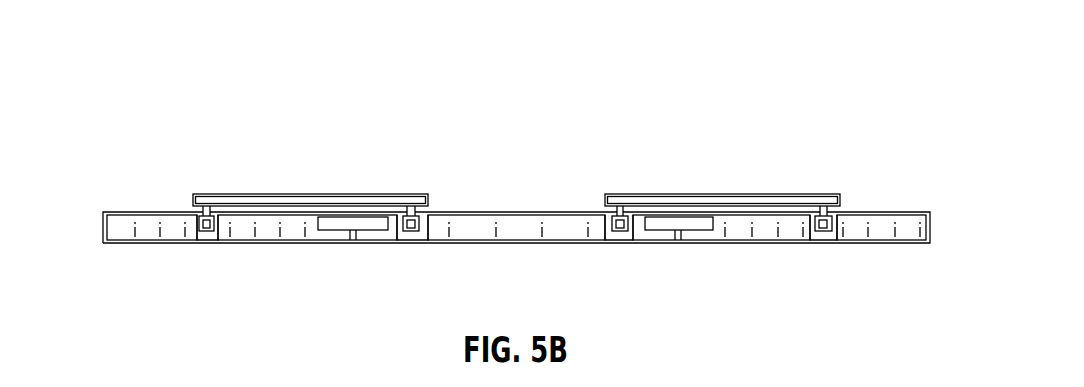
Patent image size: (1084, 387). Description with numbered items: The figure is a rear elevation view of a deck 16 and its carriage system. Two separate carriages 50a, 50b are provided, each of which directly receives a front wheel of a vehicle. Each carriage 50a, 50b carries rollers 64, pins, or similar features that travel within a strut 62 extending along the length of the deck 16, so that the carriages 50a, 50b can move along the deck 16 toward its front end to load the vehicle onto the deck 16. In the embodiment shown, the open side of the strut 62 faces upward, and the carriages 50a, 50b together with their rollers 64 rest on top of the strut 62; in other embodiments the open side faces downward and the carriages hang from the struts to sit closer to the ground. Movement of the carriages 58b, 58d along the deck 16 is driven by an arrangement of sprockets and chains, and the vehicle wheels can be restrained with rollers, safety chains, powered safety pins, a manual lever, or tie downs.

The deck 16 is at (500, 197).
The carriage 50a is at (299, 194).
The carriage 50b is at (729, 194).
The carriage 58b is at (337, 226).
The electronic component 58d is at (674, 224).
The strut 62 is at (206, 243).
The roller 64 is at (203, 225).